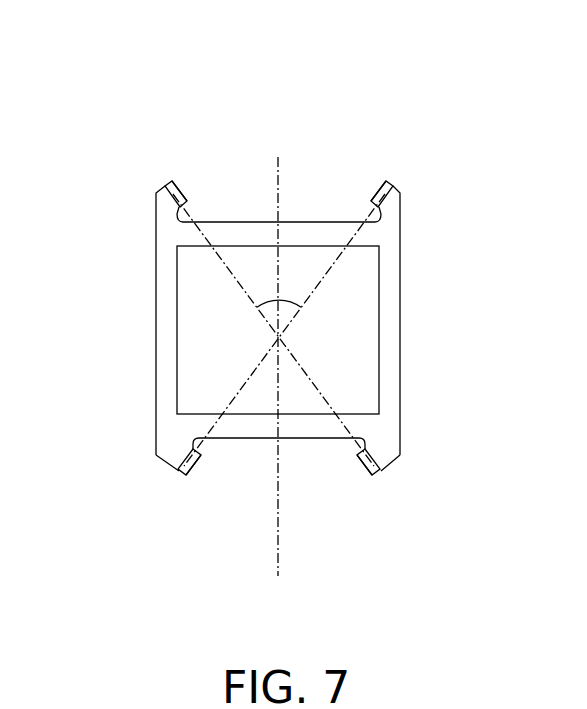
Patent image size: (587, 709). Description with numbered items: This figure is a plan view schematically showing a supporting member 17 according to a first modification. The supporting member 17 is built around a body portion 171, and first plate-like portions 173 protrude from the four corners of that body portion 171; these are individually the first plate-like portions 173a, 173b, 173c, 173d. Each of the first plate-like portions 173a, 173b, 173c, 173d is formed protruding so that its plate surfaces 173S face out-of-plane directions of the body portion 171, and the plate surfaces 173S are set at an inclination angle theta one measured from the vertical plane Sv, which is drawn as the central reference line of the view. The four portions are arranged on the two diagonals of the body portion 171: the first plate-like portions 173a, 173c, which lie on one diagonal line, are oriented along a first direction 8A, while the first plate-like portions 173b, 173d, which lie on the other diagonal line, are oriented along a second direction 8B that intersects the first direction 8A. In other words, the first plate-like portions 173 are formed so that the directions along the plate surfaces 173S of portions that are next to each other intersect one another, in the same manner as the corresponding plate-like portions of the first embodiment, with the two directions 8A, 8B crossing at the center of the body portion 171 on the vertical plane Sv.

The supporting member 17 is at (405, 86).
The body portion 171 is at (158, 338).
The first plate-like portions 173 is at (335, 323).
The first plate-like portion 173a is at (386, 180).
The first plate-like portion 173b is at (372, 477).
The first plate-like portion 173c is at (185, 476).
The first plate-like portion 173d is at (174, 180).
The plate surfaces 173S is at (168, 202).
The vertical plane Sv is at (290, 192).
The first direction 8A is at (327, 275).
The second direction 8B is at (231, 275).